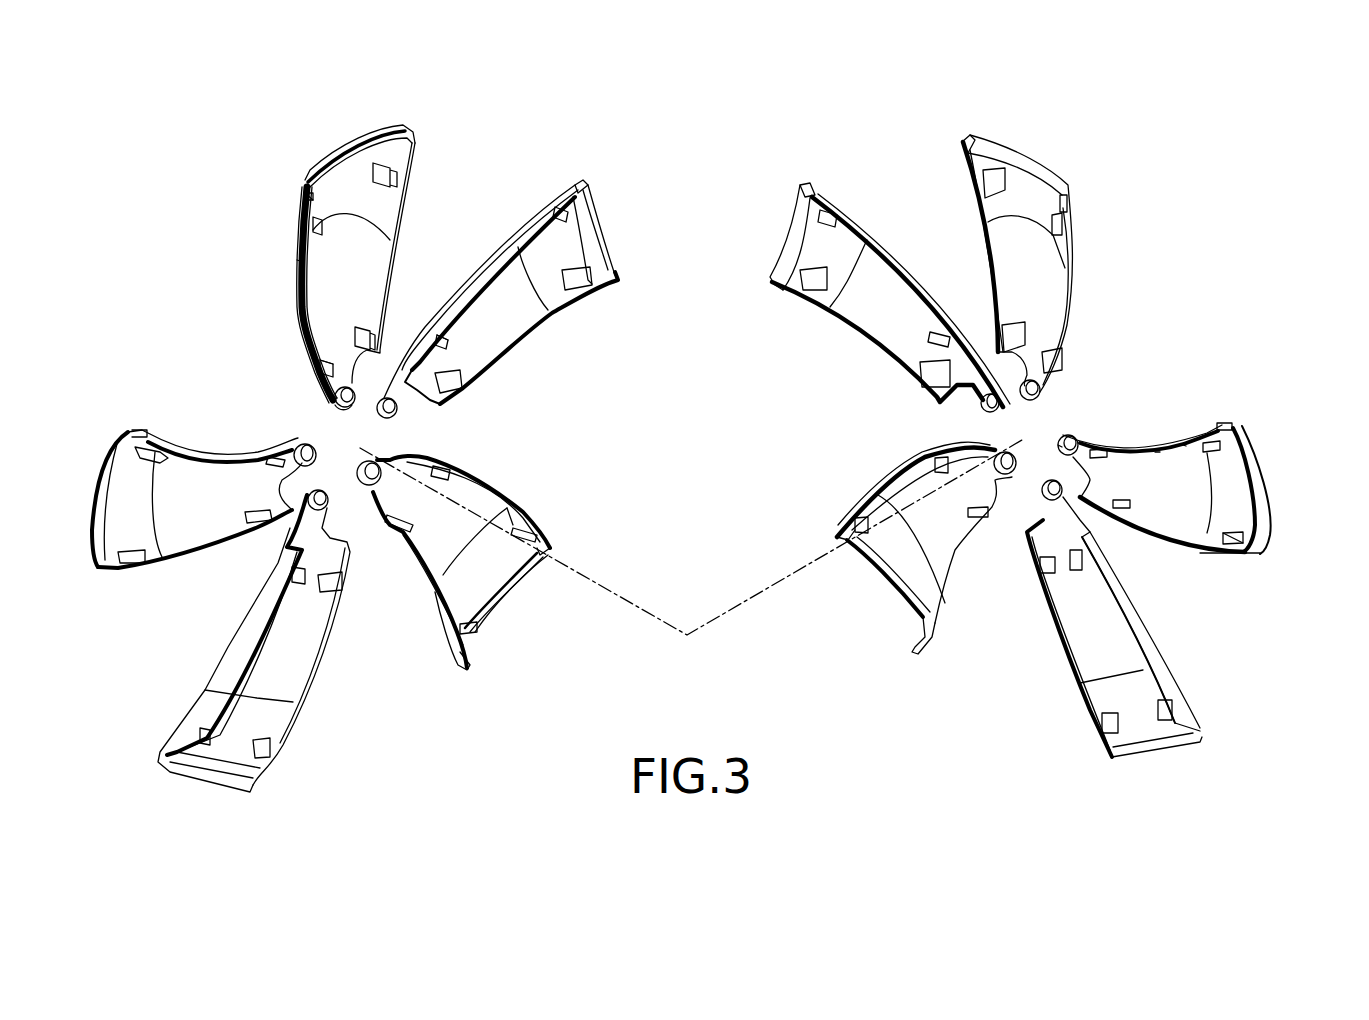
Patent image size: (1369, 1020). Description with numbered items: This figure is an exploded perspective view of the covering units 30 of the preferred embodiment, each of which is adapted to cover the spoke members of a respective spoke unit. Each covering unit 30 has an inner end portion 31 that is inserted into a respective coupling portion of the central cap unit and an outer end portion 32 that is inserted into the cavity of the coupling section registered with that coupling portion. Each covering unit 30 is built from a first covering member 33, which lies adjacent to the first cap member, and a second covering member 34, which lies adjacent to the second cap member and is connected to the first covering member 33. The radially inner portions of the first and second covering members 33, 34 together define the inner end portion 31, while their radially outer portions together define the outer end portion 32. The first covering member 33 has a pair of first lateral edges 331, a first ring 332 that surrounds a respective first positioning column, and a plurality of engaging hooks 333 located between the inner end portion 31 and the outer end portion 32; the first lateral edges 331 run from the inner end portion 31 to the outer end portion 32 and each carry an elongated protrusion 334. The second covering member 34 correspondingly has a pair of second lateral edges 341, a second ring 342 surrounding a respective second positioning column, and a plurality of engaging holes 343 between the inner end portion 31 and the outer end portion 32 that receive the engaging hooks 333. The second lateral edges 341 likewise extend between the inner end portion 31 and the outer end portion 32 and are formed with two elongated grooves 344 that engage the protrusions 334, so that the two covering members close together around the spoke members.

The covering unit 30 is at (342, 122).
The inner end portion 31 is at (318, 362).
The outer end portion 32 is at (310, 186).
The first covering member 33 is at (410, 170).
The second covering member 34 is at (1190, 547).
The first lateral edges 331 is at (297, 262).
The first ring 332 is at (330, 397).
The engaging hooks 333 is at (452, 339).
The elongated protrusions 334 is at (533, 217).
The second lateral edges 341 is at (1158, 443).
The second ring 342 is at (1067, 433).
The engaging holes 343 is at (1108, 438).
The elongated grooves 344 is at (1183, 445).